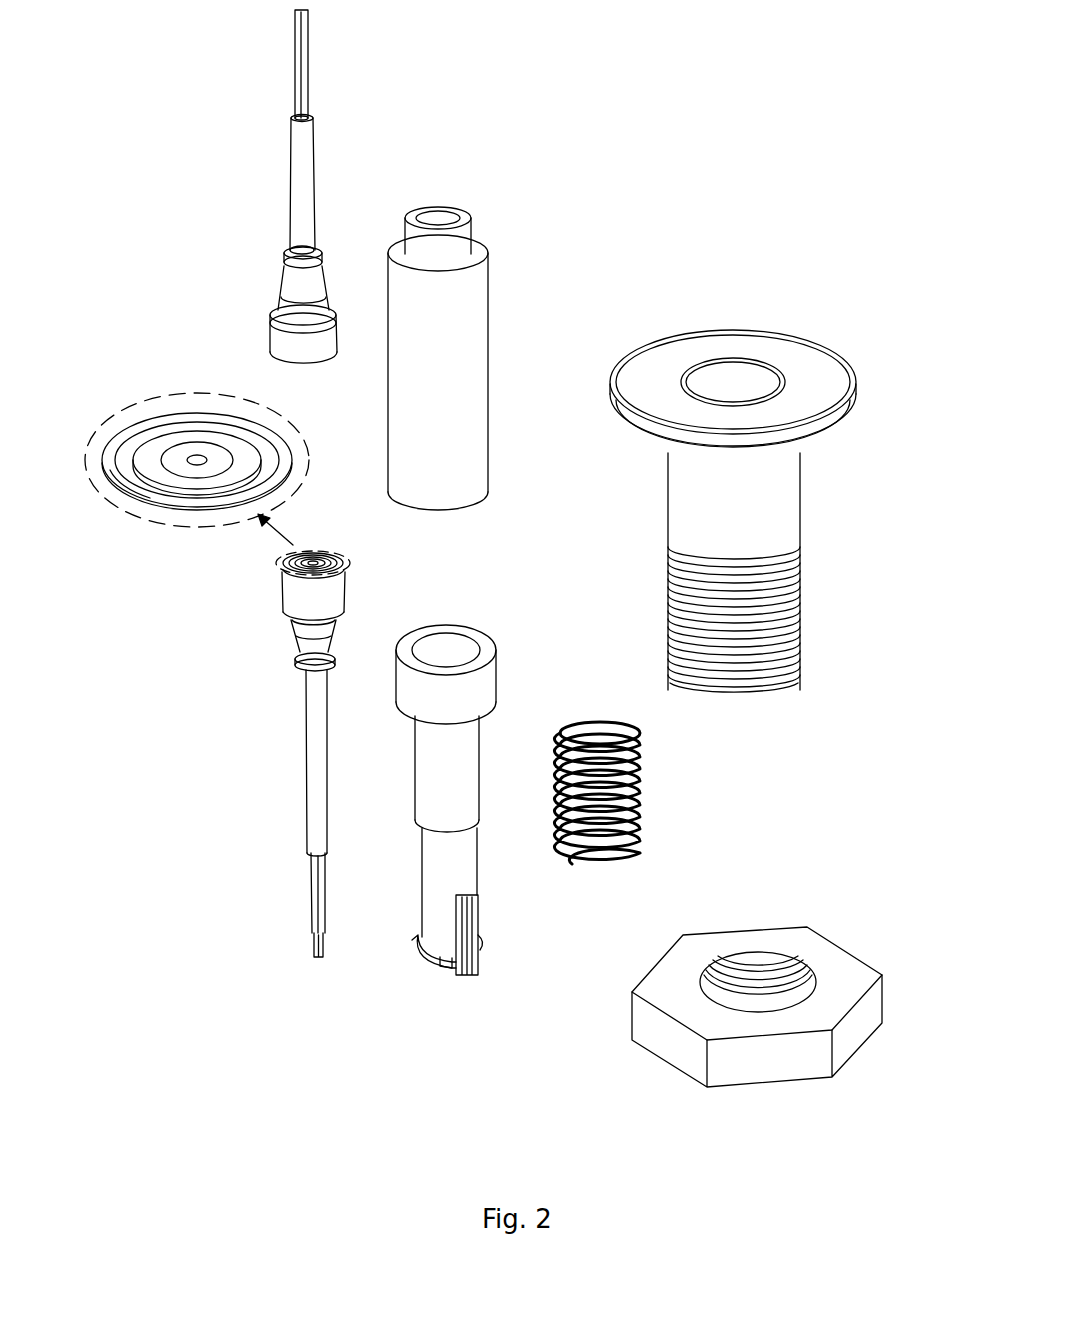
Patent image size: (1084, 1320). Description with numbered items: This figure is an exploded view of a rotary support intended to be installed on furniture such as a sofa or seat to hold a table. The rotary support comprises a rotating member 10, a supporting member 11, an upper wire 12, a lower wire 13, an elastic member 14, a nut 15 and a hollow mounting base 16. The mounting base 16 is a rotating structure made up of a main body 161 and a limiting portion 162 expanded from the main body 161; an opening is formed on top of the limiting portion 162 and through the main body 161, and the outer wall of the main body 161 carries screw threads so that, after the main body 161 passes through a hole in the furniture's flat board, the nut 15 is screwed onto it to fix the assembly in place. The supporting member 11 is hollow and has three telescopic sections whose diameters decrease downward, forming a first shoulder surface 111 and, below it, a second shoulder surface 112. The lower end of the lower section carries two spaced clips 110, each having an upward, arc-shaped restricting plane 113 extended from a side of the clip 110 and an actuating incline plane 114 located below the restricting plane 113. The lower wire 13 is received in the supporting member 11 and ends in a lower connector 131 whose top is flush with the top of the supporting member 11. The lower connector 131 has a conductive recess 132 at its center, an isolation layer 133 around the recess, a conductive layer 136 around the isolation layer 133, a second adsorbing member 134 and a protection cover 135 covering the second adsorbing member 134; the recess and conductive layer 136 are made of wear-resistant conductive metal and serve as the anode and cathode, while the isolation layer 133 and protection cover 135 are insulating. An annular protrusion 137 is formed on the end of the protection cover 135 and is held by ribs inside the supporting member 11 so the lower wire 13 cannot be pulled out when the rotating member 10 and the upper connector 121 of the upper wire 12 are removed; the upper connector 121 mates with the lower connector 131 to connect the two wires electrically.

The rotating member 10 is at (478, 316).
The supporting member 11 is at (487, 680).
The upper wire 12 is at (300, 157).
The upper connector 121 is at (320, 348).
The lower wire 13 is at (281, 805).
The lower connector 131 is at (340, 595).
The conductive recess 132 is at (195, 447).
The isolation layer 133 is at (177, 458).
The second adsorbing member 134 is at (270, 458).
The protection cover 135 is at (198, 508).
The conductive layer 136 is at (158, 473).
The annular protrusion 137 is at (298, 668).
The elastic member 14 is at (640, 815).
The nut 15 is at (643, 1023).
The mounting base 16 is at (652, 530).
The main body 161 is at (787, 517).
The limiting portion 162 is at (830, 382).
The clips 110 is at (432, 915).
The first shoulder surface 111 is at (408, 718).
The second shoulder surface 112 is at (421, 821).
The restricting plane 113 is at (420, 947).
The actuating incline plane 114 is at (443, 963).